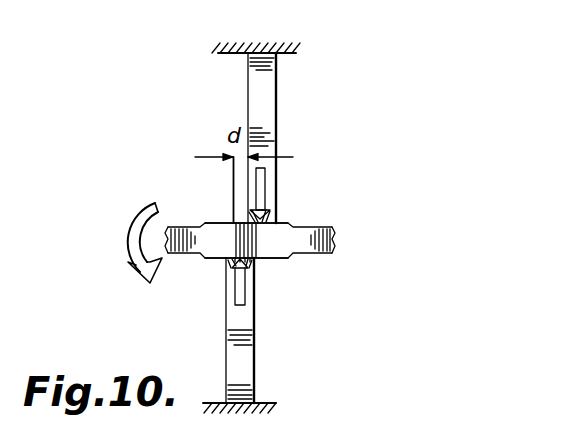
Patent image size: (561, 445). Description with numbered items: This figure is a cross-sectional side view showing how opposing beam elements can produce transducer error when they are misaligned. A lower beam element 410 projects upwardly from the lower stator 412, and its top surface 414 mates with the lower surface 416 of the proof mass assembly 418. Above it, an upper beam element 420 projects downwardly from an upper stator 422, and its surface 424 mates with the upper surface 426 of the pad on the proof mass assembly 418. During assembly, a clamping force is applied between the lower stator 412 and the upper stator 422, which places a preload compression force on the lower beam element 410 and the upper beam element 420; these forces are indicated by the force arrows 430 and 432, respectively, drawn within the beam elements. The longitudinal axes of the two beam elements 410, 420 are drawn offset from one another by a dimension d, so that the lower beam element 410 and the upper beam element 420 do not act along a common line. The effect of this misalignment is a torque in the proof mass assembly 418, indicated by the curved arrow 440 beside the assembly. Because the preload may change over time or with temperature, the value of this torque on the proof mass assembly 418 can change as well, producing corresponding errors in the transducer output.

The lower beam element 410 is at (254, 337).
The lower stator 412 is at (255, 402).
The top surface 414 is at (246, 267).
The lower surface 416 is at (283, 260).
The proof mass assembly 418 is at (335, 243).
The upper beam element 420 is at (277, 95).
The upper stator 422 is at (296, 53).
The surface 424 is at (270, 216).
The upper surface 426 is at (217, 222).
The force arrow 430 is at (235, 292).
The force arrow 432 is at (265, 190).
The arrow 440 is at (127, 265).